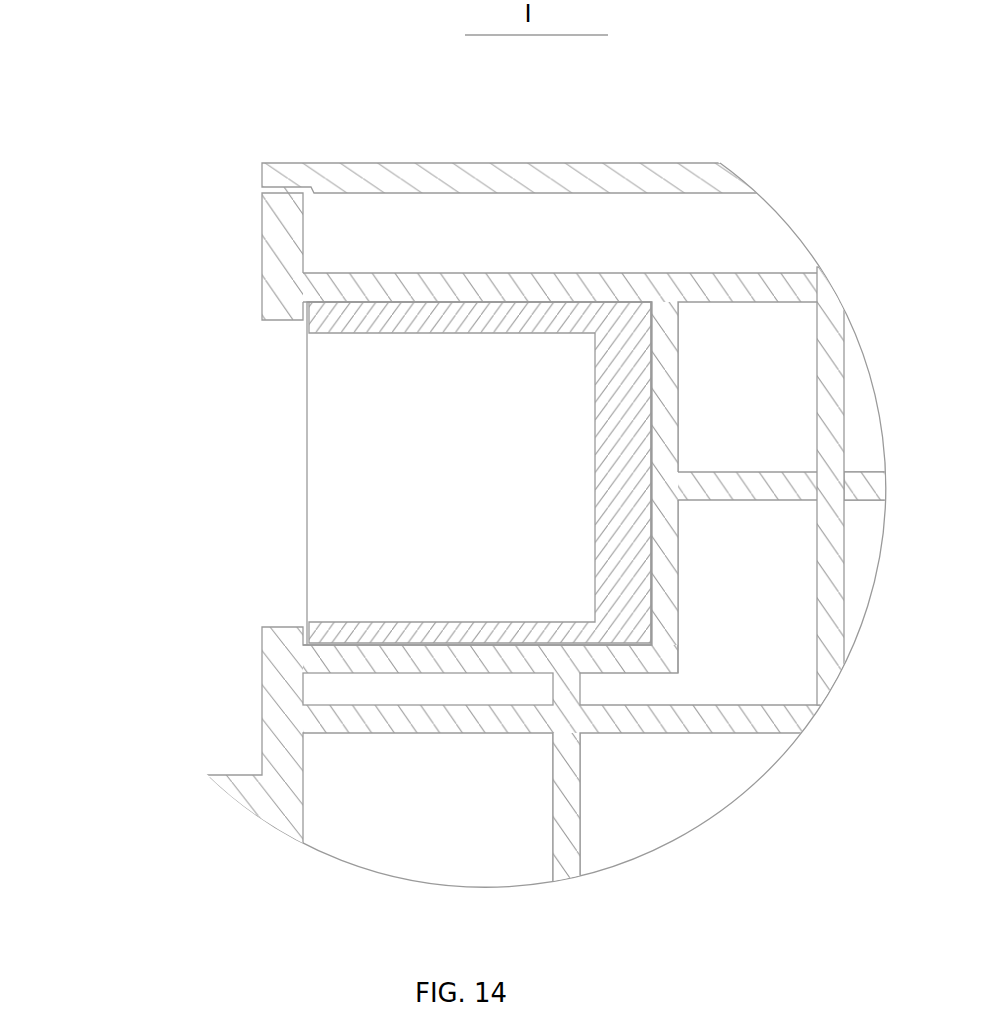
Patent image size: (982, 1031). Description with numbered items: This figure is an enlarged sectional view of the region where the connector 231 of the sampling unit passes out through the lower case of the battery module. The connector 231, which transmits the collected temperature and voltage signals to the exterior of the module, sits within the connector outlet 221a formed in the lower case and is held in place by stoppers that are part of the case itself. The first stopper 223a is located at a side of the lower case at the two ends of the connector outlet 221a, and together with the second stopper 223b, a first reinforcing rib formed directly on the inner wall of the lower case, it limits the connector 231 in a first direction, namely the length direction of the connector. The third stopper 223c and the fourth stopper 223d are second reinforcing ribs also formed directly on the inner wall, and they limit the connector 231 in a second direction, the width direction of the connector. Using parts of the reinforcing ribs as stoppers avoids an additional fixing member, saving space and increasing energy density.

The connector outlet 221a is at (290, 450).
The first stopper 223a is at (285, 258).
The second stopper 223b is at (668, 367).
The third stopper 223c is at (387, 318).
The fourth stopper 223d is at (420, 662).
The connector 231 is at (505, 365).